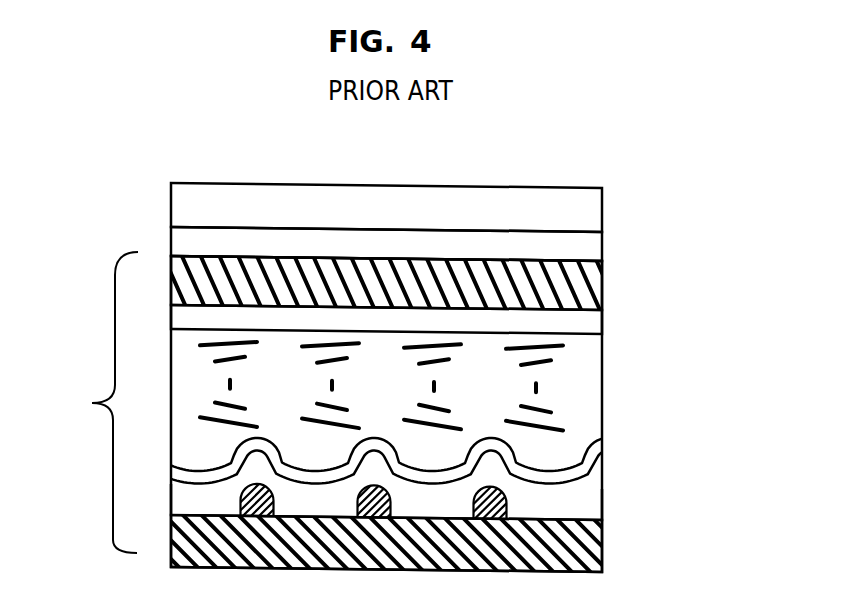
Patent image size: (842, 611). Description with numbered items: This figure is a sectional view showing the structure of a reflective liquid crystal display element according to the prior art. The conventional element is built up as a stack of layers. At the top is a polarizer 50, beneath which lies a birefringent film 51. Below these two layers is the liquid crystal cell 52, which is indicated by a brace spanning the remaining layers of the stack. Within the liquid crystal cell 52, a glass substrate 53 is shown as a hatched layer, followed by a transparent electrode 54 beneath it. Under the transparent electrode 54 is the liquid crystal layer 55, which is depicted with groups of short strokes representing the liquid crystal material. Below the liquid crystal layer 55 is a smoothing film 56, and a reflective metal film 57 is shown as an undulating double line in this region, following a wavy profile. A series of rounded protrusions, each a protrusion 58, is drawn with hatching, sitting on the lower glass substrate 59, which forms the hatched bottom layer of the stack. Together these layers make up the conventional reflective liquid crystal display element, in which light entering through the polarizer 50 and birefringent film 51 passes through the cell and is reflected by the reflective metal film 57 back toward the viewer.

The polarizer 50 is at (580, 205).
The birefringent film 51 is at (580, 242).
The liquid crystal cell 52 is at (316, 412).
The glass substrate 53 is at (603, 277).
The transparent electrode 54 is at (585, 320).
The liquid crystal layer 55 is at (583, 347).
The smoothing film 56 is at (587, 487).
The reflective metal film 57 is at (538, 460).
The protrusion 58 is at (502, 502).
The lower glass substrate 59 is at (570, 521).